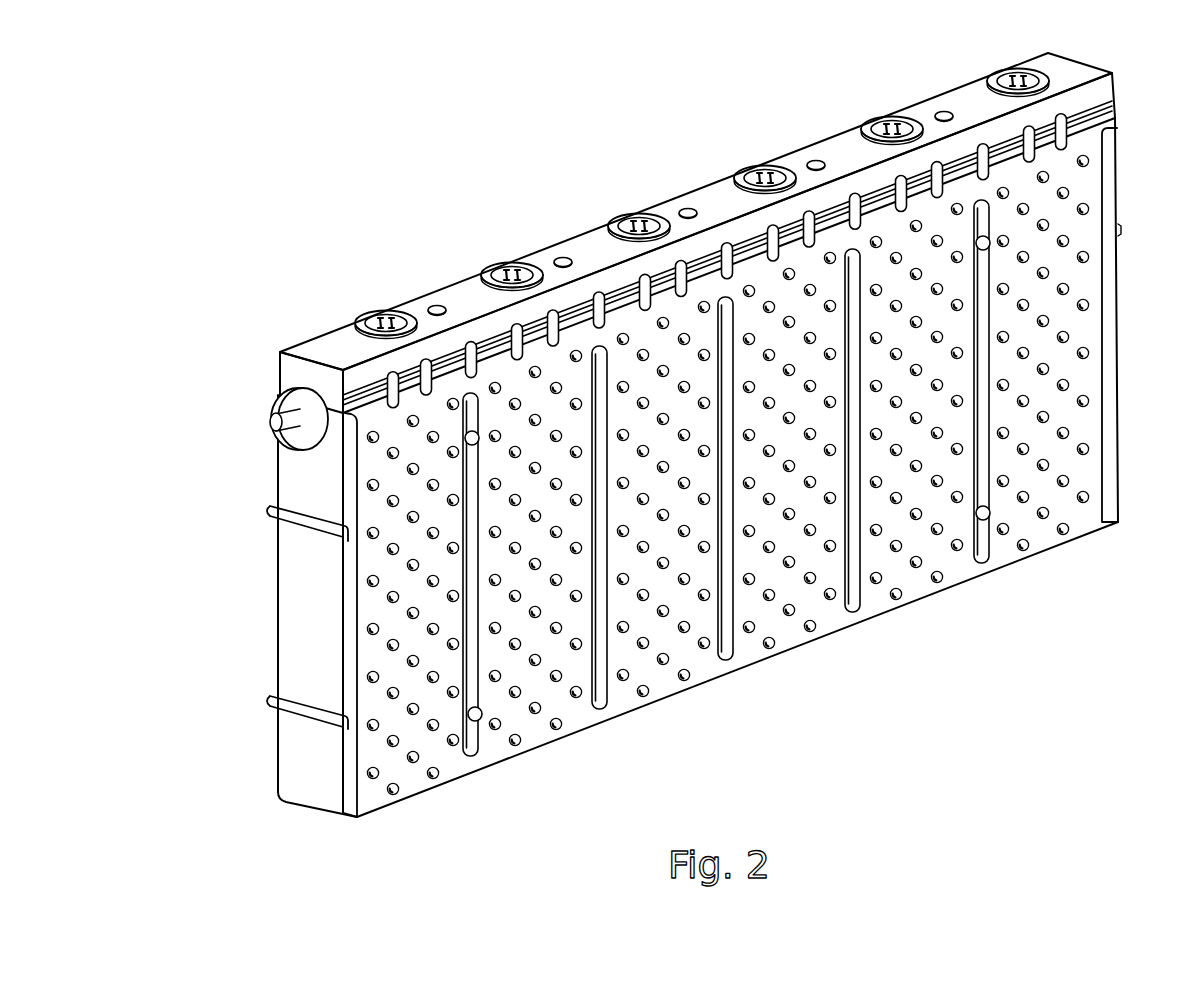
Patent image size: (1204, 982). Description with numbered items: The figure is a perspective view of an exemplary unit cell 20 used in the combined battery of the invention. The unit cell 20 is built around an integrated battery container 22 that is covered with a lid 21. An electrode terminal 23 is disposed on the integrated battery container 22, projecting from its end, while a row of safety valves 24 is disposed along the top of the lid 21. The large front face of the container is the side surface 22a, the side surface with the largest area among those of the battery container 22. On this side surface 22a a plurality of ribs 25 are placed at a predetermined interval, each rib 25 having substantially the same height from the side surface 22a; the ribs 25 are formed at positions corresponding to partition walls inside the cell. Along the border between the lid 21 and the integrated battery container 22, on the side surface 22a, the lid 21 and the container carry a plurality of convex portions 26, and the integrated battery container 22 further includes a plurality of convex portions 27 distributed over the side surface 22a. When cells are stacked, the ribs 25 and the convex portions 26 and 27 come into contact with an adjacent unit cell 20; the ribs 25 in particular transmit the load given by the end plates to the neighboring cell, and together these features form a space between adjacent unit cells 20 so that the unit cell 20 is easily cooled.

The unit cell 20 is at (460, 160).
The lid 21 is at (358, 380).
The integrated battery container 22 is at (266, 585).
The side surface 22a is at (800, 628).
The electrode terminal 23 is at (287, 415).
The safety valve 24 is at (645, 213).
The rib 25 is at (350, 632).
The convex portion 26 is at (393, 372).
The convex portion 27 is at (457, 752).